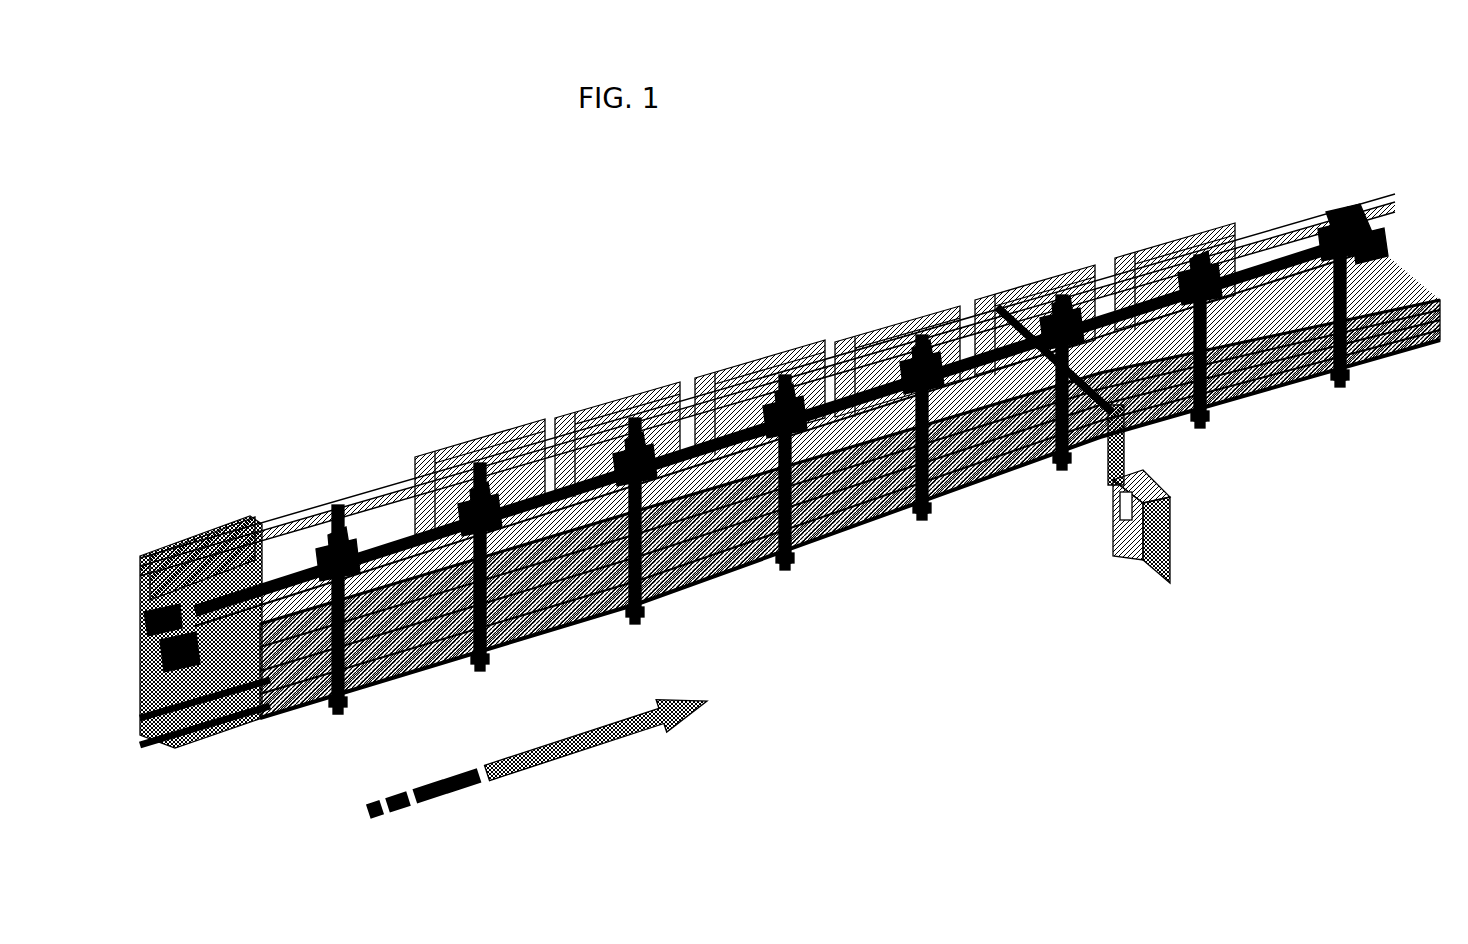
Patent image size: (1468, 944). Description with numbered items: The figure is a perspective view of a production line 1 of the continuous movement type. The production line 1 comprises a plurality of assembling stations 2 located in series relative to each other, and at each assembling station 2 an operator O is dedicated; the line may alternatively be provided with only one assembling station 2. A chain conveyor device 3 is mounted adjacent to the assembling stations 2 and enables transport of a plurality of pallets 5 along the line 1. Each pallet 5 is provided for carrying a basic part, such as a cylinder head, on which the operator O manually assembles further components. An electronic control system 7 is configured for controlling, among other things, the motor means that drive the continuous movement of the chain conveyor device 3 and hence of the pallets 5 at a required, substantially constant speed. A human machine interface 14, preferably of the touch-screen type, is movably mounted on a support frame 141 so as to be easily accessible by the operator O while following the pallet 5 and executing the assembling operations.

The production line 1 is at (528, 366).
The assembling station 2 is at (213, 502).
The chain conveyor device 3 is at (850, 538).
The pallet 5 is at (330, 702).
The operator O is at (347, 705).
The electronic control system 7 is at (1162, 586).
The human machine interface 14 is at (1385, 252).
The support frame 141 is at (1350, 220).